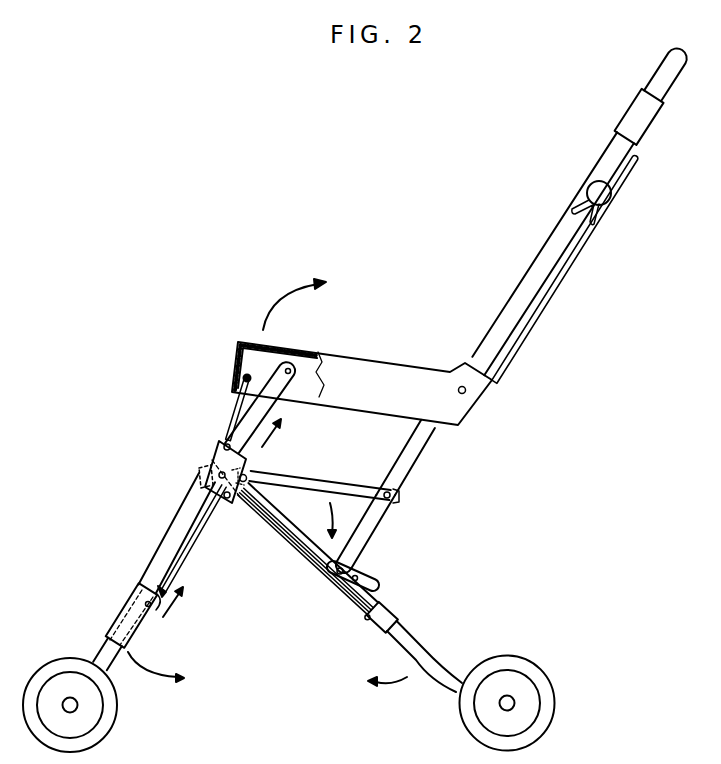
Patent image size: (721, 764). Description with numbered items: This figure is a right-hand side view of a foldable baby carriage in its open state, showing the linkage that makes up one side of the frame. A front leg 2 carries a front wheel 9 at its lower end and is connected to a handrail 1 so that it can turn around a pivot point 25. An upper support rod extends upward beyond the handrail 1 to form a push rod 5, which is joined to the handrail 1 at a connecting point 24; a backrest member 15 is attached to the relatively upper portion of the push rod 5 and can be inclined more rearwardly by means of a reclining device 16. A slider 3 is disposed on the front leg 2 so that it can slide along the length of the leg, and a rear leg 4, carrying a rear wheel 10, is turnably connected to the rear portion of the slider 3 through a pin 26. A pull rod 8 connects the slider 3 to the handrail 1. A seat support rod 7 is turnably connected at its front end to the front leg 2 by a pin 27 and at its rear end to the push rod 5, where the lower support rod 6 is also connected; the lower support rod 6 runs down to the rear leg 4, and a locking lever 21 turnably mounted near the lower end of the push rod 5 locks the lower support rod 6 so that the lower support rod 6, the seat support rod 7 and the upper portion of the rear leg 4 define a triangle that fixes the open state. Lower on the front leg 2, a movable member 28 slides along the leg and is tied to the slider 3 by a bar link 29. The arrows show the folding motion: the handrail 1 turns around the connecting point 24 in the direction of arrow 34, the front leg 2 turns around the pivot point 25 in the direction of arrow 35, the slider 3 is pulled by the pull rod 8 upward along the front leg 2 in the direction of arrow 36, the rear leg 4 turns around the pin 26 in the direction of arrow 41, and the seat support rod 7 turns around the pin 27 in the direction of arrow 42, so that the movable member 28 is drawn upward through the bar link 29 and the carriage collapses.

The handrail 1 is at (372, 363).
The front leg 2 is at (182, 531).
The slider 3 is at (214, 458).
The rear leg 4 is at (418, 651).
The push rod 5 is at (430, 447).
The lower support rod 6 is at (375, 520).
The seat support rod 7 is at (334, 490).
The pull rod 8 is at (237, 410).
The front wheel 9 is at (73, 659).
The rear wheel 10 is at (555, 700).
The backrest member 15 is at (575, 273).
The reclining device 16 is at (606, 200).
The locking lever 21 is at (375, 581).
The connecting point 24 is at (467, 394).
The pivot point 25 is at (289, 364).
The pin 26 is at (248, 477).
The pin 27 is at (199, 473).
The movable member 28 is at (128, 606).
The bar link 29 is at (192, 547).
The arrow 34 is at (285, 292).
The arrow 35 is at (146, 672).
The arrow 36 is at (280, 440).
The arrow 41 is at (394, 684).
The arrow 42 is at (327, 510).